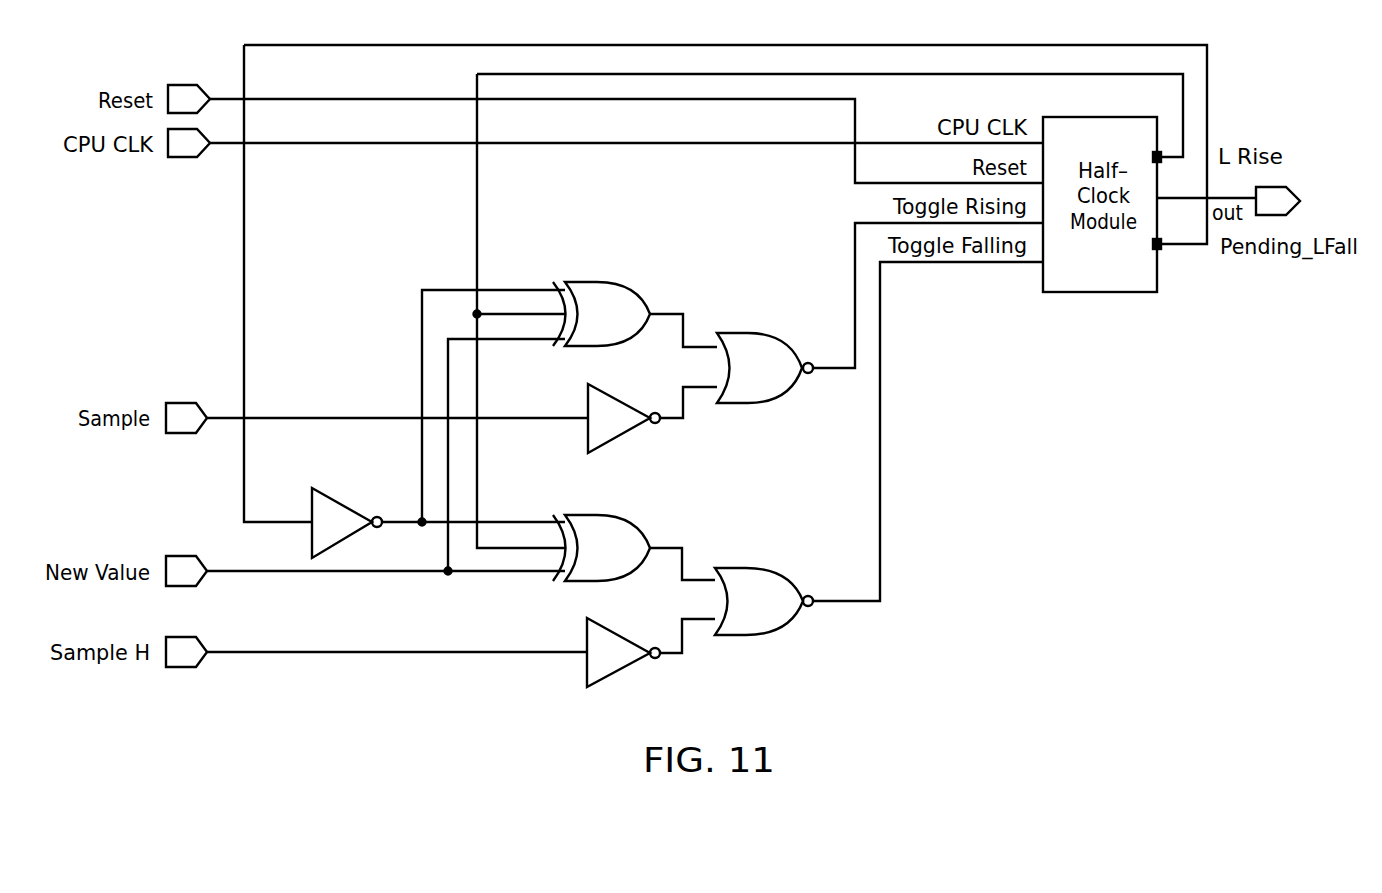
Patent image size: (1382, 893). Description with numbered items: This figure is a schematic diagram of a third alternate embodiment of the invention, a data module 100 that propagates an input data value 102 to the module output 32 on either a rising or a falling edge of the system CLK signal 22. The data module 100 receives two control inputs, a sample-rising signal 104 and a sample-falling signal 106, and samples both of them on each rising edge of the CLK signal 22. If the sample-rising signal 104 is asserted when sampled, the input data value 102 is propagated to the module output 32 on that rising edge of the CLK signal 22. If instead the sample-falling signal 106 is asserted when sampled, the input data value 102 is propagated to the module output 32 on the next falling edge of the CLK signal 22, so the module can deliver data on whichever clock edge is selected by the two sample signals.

The system CLK signal 22 is at (175, 165).
The module output 32 is at (1345, 200).
The data module 100 is at (447, 664).
The input data value 102 is at (77, 585).
The sample-rising signal 104 is at (78, 432).
The sample-falling signal 106 is at (77, 666).